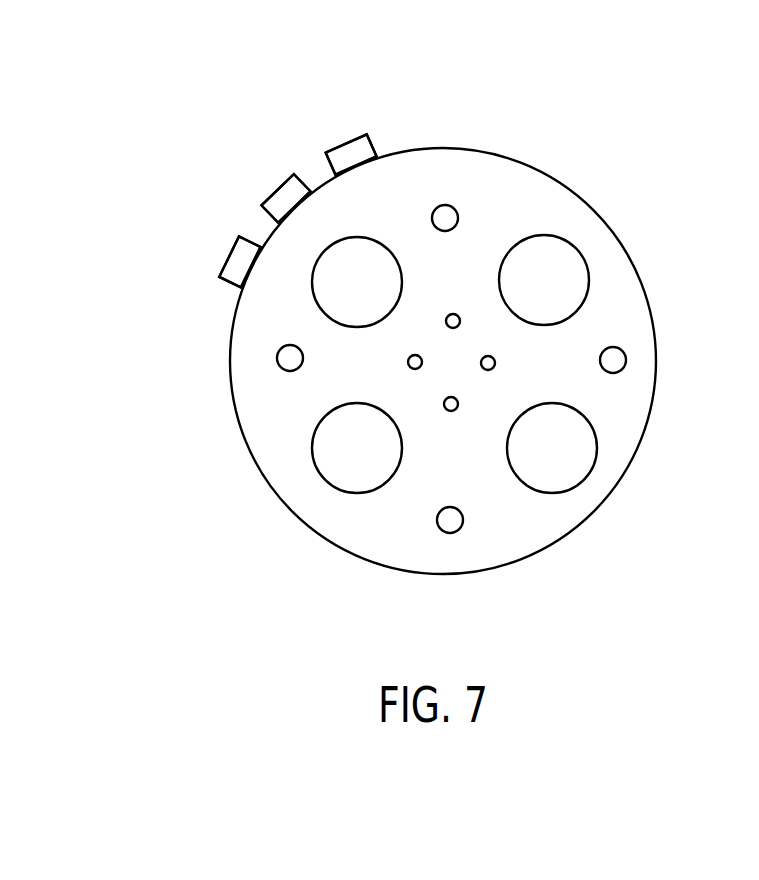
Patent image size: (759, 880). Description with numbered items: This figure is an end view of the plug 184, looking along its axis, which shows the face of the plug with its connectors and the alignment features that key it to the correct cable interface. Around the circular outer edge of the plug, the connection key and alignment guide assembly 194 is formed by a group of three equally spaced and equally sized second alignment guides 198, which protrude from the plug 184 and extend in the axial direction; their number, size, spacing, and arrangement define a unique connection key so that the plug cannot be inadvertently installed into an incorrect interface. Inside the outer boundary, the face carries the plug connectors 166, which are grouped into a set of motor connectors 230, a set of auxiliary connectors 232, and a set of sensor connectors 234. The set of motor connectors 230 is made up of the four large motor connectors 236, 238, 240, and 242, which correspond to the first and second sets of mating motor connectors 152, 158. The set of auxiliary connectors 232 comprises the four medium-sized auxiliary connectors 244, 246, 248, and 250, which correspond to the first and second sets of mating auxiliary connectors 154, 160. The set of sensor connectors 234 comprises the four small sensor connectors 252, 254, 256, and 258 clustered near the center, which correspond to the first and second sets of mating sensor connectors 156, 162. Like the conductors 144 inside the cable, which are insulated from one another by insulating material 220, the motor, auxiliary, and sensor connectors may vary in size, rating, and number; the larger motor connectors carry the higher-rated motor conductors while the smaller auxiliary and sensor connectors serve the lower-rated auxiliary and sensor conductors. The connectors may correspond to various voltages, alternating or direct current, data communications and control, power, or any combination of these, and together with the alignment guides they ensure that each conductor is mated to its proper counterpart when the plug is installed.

The plug 184 is at (238, 129).
The second alignment guides 198 is at (348, 142).
The connection key and alignment guide assembly 194 is at (614, 139).
The insulating material 220 is at (405, 553).
The motor connector 238 is at (360, 237).
The motor connector 240 is at (588, 311).
The set of motor connectors 230 is at (311, 423).
The motor connector 242 is at (598, 448).
The auxiliary connector 248 is at (438, 207).
The auxiliary connector 246 is at (280, 350).
The auxiliary connector 250 is at (623, 368).
The set of auxiliary connectors 232 is at (444, 543).
The sensor connector 256 is at (446, 320).
The sensor connector 254 is at (408, 360).
The sensor connector 258 is at (494, 367).
The sensor connector 252 is at (447, 410).
The first set of mating auxiliary connectors 154 is at (455, 179).
The second set of mating auxiliary connectors 160 is at (445, 218).
The first set of mating sensor connectors 156 is at (463, 304).
The second set of mating sensor connectors 162 is at (453, 321).
The motor connector 236 is at (312, 448).
The first set of mating motor connectors 152 is at (320, 495).
The second set of mating motor connectors 158 is at (357, 448).
The conductors 144 is at (378, 524).
The set of sensor connectors 234 is at (462, 414).
The plug connectors 166 is at (557, 510).
The auxiliary connector 244 is at (458, 531).